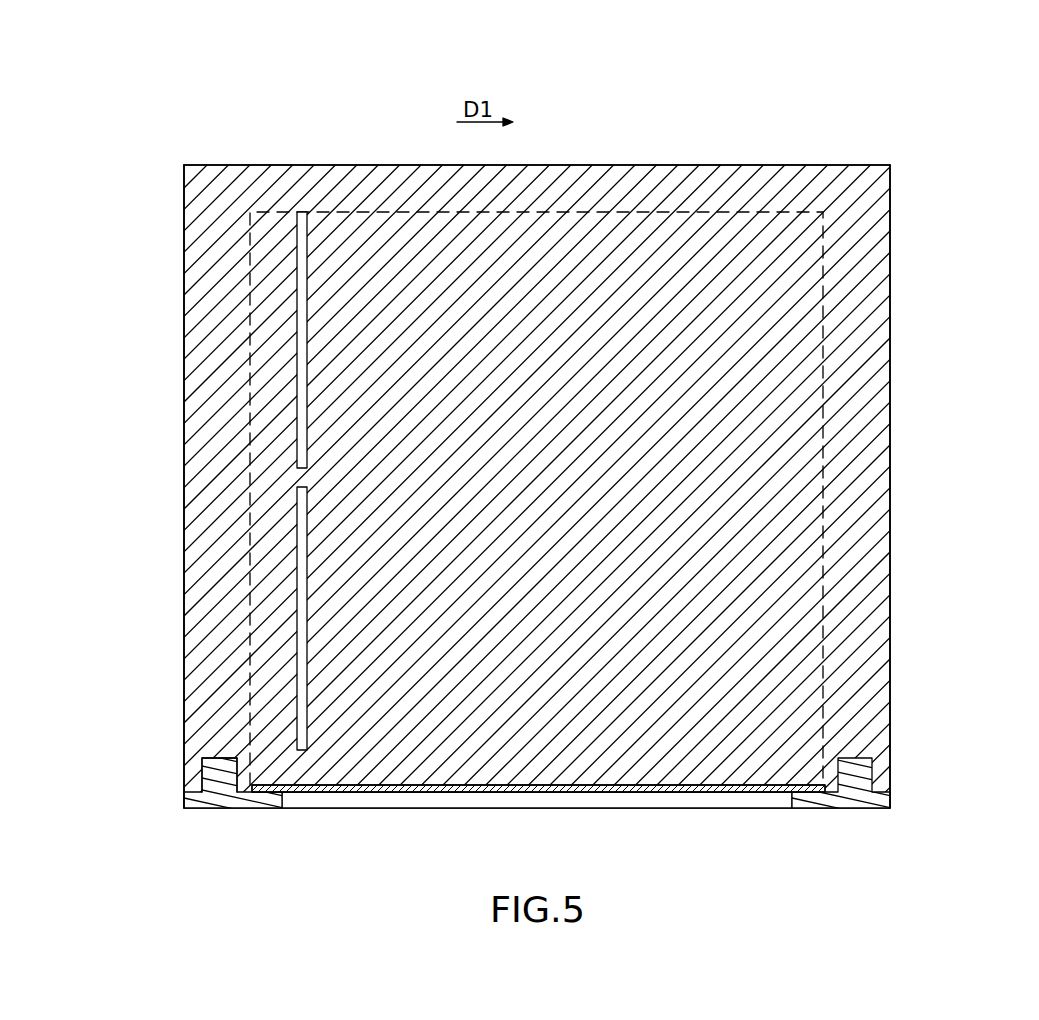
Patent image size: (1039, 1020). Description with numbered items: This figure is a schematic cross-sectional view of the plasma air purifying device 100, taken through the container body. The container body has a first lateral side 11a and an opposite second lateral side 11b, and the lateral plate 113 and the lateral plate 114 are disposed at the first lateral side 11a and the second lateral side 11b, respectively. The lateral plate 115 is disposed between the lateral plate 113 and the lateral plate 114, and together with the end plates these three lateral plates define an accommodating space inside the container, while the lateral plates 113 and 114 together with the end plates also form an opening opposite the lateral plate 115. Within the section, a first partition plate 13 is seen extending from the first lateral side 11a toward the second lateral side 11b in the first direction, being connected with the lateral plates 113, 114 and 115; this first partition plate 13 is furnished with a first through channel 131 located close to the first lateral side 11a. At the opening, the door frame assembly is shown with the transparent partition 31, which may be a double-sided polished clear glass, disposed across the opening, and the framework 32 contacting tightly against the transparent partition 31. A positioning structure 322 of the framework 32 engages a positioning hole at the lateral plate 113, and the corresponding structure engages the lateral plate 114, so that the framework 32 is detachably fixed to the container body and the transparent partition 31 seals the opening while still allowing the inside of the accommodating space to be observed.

The plasma air purifying device 100 is at (152, 108).
The first lateral side 11a is at (170, 245).
The second lateral side 11b is at (902, 245).
The lateral plate 113 is at (184, 325).
The lateral plate 114 is at (890, 368).
The lateral plate 115 is at (667, 165).
The first partition plate 13 is at (365, 212).
The first through channel 131 is at (297, 543).
The framework 32 is at (192, 815).
The positioning structure 322 is at (208, 778).
The transparent partition 31 is at (330, 793).